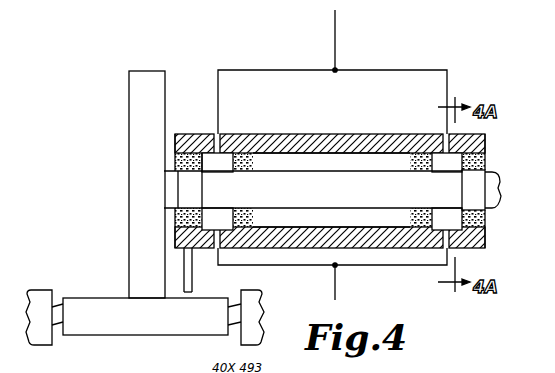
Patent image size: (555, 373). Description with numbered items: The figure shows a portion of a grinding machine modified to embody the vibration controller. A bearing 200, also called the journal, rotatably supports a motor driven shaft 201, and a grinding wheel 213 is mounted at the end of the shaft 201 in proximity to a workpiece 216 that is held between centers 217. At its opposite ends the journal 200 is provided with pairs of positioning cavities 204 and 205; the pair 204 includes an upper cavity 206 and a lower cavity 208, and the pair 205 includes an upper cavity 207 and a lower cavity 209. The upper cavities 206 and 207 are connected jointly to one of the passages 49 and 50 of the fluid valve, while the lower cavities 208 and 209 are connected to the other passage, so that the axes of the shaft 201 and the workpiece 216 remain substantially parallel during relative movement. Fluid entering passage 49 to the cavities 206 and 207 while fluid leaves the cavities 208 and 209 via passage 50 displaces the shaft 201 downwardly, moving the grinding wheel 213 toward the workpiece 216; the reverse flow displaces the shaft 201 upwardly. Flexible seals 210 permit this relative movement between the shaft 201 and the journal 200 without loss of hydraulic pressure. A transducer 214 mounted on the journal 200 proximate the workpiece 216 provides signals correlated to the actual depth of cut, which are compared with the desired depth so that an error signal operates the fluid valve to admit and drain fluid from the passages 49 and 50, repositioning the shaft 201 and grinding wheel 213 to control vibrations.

The passage 49 is at (337, 17).
The passage 50 is at (332, 280).
The bearing 200 is at (320, 134).
The motor driven shaft 201 is at (332, 190).
The pair of positioning cavities 204 is at (219, 164).
The pair of positioning cavities 205 is at (447, 214).
The upper cavity 206 is at (212, 166).
The upper cavity 207 is at (453, 160).
The lower cavity 208 is at (203, 250).
The lower cavity 209 is at (456, 229).
The flexible seals 210 is at (186, 150).
The grinding wheel 213 is at (130, 168).
The transducer 214 is at (188, 294).
The workpiece 216 is at (96, 310).
The centers 217 is at (41, 300).